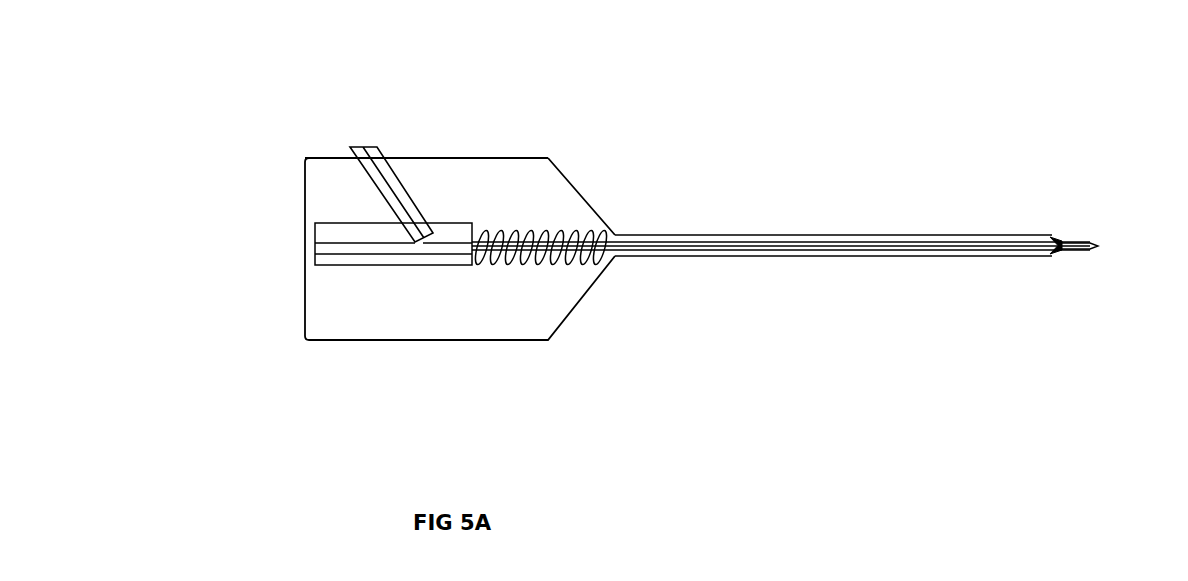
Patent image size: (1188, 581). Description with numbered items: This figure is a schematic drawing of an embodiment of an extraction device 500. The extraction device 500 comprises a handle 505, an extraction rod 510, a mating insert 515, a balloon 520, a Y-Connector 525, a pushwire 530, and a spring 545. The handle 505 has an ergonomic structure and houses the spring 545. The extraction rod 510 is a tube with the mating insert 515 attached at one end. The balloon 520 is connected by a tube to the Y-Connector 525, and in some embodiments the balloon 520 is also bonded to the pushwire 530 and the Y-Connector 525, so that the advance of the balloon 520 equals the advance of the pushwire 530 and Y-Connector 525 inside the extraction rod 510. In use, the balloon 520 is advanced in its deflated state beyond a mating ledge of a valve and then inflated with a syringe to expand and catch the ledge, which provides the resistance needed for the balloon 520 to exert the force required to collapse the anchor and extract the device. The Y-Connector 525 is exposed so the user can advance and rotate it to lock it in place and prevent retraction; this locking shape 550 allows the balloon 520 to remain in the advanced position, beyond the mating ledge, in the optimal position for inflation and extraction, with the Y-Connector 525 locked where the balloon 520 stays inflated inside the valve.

The extraction device 500 is at (694, 265).
The handle 505 is at (435, 307).
The extraction rod 510 is at (833, 198).
The mating insert 515 is at (1045, 188).
The balloon 520 is at (1097, 195).
The Y-Connector 525 is at (391, 142).
The pushwire 530 is at (781, 365).
The spring 545 is at (541, 344).
The locking shape 550 is at (426, 119).